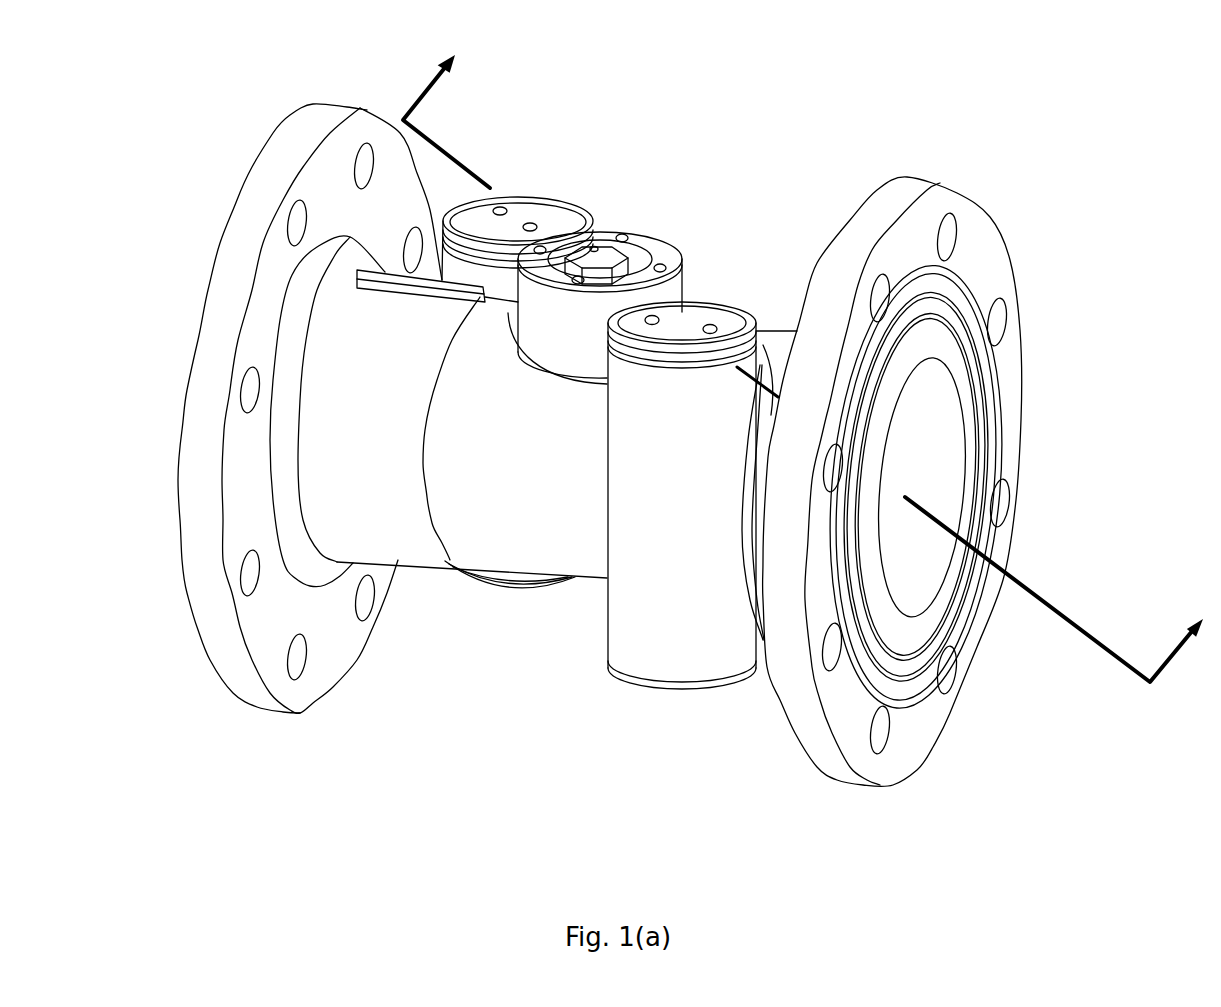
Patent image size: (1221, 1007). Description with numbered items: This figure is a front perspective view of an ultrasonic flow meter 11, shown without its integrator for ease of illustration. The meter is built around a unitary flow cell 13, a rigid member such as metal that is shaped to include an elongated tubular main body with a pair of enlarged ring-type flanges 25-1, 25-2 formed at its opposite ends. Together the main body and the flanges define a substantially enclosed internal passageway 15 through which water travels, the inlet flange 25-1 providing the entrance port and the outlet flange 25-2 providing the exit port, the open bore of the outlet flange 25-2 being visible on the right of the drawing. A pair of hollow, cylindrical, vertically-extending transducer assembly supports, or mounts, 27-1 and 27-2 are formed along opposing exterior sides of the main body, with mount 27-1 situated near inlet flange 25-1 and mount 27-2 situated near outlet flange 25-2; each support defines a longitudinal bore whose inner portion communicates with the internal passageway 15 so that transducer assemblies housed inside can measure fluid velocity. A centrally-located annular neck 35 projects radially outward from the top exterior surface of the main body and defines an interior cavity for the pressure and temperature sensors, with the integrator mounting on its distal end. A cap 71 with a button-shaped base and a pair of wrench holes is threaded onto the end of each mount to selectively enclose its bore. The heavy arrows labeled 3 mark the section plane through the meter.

The ultrasonic flow meter 11 is at (966, 840).
The flow cell 13 is at (407, 540).
The internal passageway 15 is at (968, 414).
The inlet flange 25-1 is at (238, 201).
The outlet flange 25-2 is at (998, 225).
The transducer assembly support 27-1 is at (492, 570).
The transducer assembly support 27-2 is at (677, 670).
The annular neck 35 is at (657, 240).
The cap 71 is at (527, 205).
The section line 3 is at (810, 353).